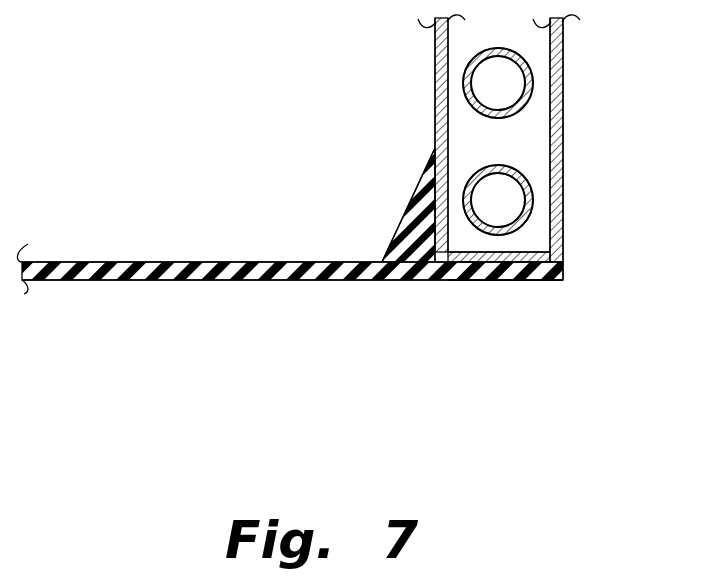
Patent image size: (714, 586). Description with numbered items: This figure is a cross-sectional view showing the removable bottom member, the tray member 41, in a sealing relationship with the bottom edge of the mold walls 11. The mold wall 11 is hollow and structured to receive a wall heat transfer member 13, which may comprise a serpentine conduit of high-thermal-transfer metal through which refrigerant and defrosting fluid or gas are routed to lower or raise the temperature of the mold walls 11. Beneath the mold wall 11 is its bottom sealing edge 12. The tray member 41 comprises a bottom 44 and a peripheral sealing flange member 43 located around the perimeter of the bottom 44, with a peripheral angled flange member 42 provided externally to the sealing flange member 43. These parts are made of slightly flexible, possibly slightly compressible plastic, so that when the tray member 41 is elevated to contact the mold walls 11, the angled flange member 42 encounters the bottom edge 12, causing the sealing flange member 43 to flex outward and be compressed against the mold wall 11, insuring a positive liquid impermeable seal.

The mold walls 11 is at (563, 192).
The bottom sealing edge 12 is at (503, 266).
The wall heat transfer members 13 is at (528, 180).
The tray member 41 is at (290, 330).
The angled flange member 42 is at (537, 282).
The sealing flange member 43 is at (403, 207).
The bottom 44 is at (180, 262).